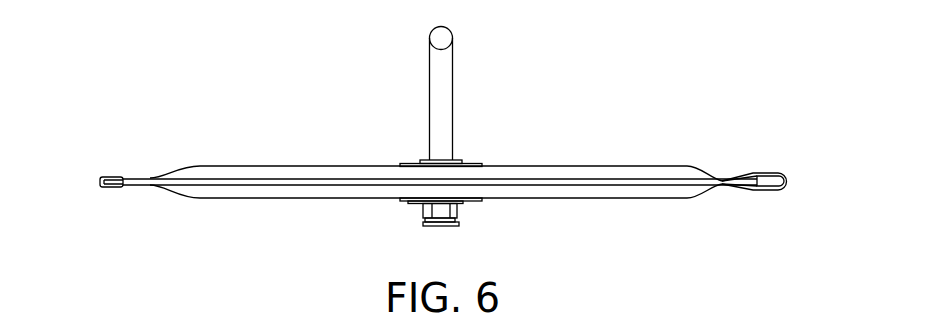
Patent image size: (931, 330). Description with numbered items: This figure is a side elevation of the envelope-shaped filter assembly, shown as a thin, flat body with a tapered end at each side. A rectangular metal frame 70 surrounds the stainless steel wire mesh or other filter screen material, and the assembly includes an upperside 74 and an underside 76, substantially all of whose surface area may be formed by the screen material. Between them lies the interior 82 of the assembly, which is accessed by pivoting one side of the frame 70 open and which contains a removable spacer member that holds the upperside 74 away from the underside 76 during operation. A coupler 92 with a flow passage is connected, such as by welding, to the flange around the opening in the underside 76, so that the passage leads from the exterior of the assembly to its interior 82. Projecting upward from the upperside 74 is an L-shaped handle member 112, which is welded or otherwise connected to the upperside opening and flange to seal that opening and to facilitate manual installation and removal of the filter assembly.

The rectangular metal frame 70 is at (112, 177).
The upperside 74 is at (180, 168).
The underside 76 is at (175, 193).
The interior 82 is at (645, 172).
The coupler 92 is at (422, 205).
The L-shaped handle member 112 is at (453, 93).